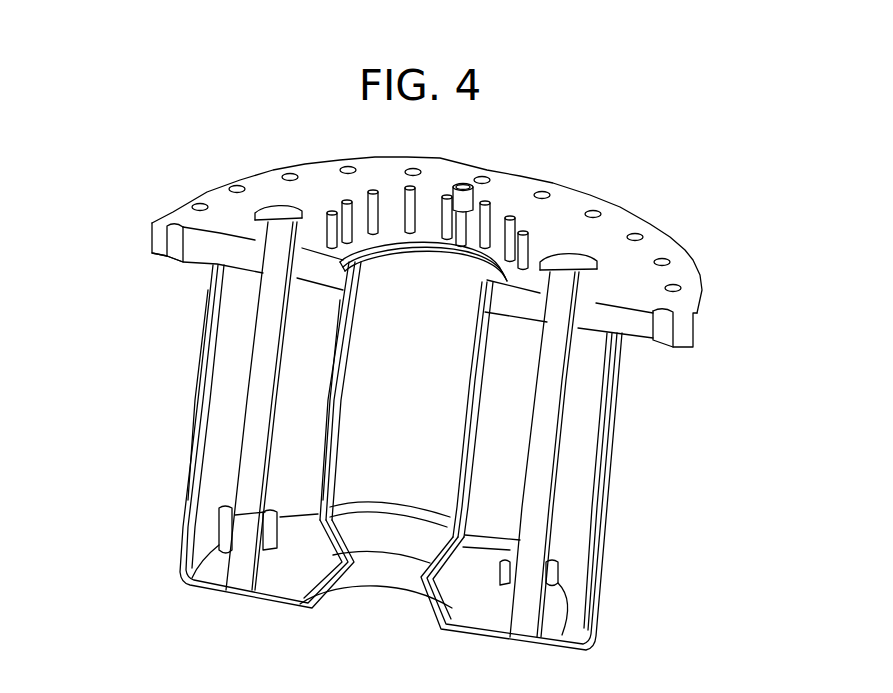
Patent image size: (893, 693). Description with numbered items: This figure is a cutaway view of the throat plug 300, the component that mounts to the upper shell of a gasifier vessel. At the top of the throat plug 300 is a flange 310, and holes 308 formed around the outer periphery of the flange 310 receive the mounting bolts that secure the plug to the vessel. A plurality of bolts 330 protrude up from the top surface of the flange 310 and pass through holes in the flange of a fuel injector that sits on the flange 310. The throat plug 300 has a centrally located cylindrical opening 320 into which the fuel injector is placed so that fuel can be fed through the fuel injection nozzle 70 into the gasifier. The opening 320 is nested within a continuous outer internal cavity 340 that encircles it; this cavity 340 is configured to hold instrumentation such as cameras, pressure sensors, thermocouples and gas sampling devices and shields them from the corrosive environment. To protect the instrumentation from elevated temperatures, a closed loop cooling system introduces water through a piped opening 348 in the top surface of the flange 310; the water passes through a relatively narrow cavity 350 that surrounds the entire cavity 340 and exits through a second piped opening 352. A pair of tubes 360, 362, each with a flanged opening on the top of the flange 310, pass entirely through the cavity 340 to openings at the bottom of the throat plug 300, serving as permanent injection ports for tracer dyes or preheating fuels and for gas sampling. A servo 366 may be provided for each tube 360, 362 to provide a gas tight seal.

The fuel injection nozzle 70 is at (377, 598).
The throat plug 300 is at (155, 146).
The holes 308 is at (290, 174).
The flange 310 is at (576, 210).
The cylindrical opening 320 is at (425, 431).
The bolts 330 is at (373, 190).
The outer internal cavity 340 is at (220, 395).
The piped opening 348 is at (462, 184).
The narrow cavity 350 is at (207, 353).
The second piped opening 352 is at (462, 249).
The tube 360 is at (547, 438).
The tube 362 is at (267, 328).
The servo 366 is at (223, 527).